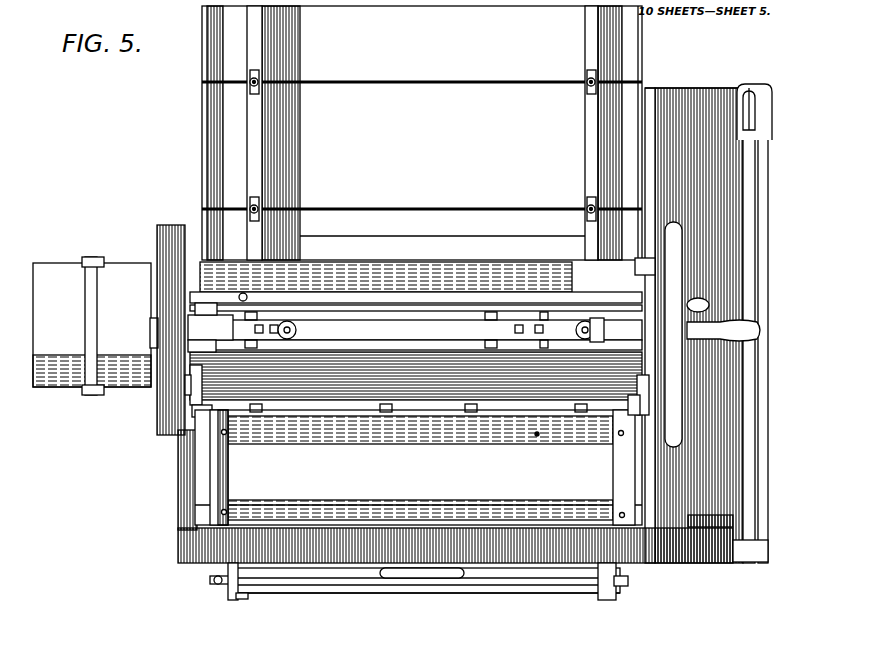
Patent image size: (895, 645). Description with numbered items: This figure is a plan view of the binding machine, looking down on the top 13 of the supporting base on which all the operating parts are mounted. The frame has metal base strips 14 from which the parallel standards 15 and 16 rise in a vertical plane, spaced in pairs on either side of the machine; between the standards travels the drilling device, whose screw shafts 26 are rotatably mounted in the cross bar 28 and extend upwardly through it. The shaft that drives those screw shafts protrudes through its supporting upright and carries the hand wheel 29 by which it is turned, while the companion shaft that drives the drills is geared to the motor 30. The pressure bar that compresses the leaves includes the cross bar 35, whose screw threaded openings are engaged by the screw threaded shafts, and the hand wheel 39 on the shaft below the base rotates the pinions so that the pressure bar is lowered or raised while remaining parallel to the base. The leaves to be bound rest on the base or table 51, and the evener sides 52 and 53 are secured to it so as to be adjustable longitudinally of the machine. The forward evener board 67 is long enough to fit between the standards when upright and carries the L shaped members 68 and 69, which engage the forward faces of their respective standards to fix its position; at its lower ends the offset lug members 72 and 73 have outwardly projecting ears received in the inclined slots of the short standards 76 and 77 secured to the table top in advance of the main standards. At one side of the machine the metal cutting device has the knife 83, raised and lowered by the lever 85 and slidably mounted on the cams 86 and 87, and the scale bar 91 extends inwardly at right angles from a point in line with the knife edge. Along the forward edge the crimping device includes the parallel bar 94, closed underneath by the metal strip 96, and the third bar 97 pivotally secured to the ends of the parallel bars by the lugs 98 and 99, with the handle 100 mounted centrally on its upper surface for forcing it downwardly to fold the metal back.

The top 13 is at (760, 440).
The base strips 14 is at (193, 480).
The standards 15 is at (596, 352).
The standards 16 is at (213, 310).
The screw shafts 26 is at (285, 339).
The cross bar 28 is at (440, 334).
The hand wheel 29 is at (680, 235).
The motor 30 is at (68, 387).
The cross bar 35 is at (463, 294).
The hand wheel 39 is at (655, 268).
The base or table 51 is at (422, 133).
The evener side 52 is at (258, 126).
The evener side 53 is at (594, 114).
The forward evener board 67 is at (418, 464).
The L shaped member 68 is at (222, 497).
The L shaped member 69 is at (623, 480).
The offset lug member 72 is at (198, 425).
The offset lug member 73 is at (640, 412).
The short standard 76 is at (197, 385).
The short standard 77 is at (652, 388).
The knife 83 is at (760, 360).
The lever 85 is at (750, 277).
The cam 86 is at (748, 563).
The cam 87 is at (752, 103).
The scale bar 91 is at (740, 520).
The parallel bar 94 is at (497, 586).
The metal strip 96 is at (212, 582).
The third bar 97 is at (541, 576).
The lug 98 is at (228, 598).
The lug 99 is at (626, 590).
The handle 100 is at (405, 578).